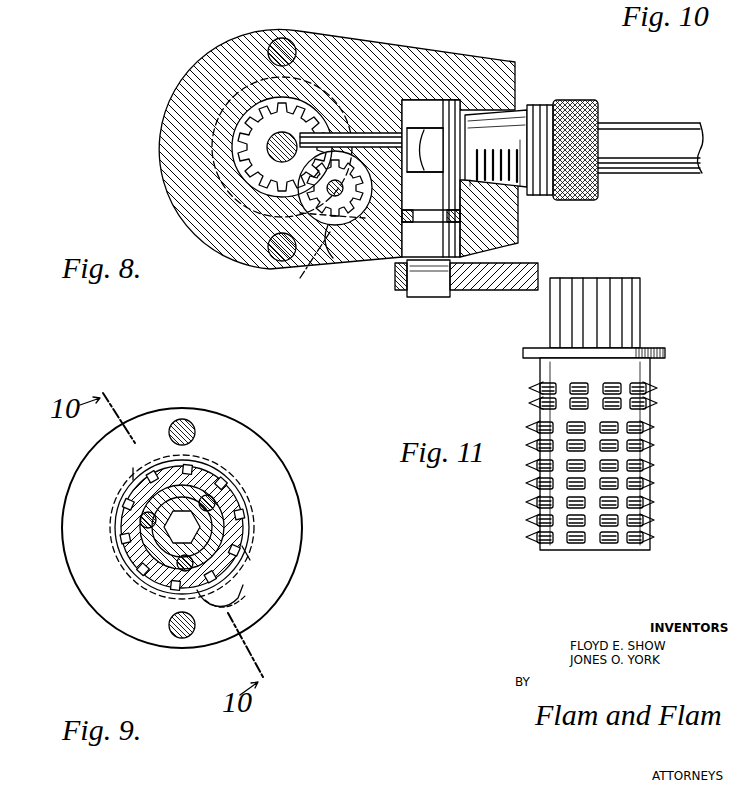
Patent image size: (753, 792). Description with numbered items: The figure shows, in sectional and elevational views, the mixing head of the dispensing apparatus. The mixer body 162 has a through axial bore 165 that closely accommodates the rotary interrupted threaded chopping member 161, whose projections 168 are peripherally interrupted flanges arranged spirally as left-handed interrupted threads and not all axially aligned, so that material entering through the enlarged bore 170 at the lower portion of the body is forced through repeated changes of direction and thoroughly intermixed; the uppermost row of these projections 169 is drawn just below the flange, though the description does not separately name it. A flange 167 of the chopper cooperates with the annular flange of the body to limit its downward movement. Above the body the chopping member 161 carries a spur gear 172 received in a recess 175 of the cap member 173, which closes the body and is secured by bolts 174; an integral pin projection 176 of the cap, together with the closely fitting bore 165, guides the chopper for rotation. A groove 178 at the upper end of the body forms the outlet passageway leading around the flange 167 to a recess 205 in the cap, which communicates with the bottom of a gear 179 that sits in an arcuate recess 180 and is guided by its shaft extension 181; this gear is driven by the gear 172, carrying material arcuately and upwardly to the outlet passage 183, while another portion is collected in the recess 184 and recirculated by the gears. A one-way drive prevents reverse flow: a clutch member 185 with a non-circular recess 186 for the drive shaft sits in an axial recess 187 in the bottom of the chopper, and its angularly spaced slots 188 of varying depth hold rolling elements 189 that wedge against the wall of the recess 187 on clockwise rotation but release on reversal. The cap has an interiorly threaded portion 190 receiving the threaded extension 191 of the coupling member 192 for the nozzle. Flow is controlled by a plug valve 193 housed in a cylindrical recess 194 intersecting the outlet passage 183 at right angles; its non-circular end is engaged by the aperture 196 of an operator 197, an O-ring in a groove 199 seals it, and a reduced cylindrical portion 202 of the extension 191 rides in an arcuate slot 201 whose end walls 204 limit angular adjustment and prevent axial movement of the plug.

In FIG. 9, the chopping member 161 is at (228, 478).
In FIG. 11, the chopping member 161 is at (652, 372).
In FIG. 9, the mixer body 162 is at (278, 574).
In FIG. 9, the axial bore 165 is at (202, 527).
In FIG. 11, the flange 167 is at (665, 352).
In FIG. 9, the projections 168 is at (134, 468).
In FIG. 11, the projections 168 is at (660, 426).
In FIG. 11, the upper teeth 169 is at (530, 401).
In FIG. 9, the bore 170 is at (252, 489).
In FIG. 8, the spur gear 172 is at (266, 156).
In FIG. 11, the spur gear 172 is at (618, 307).
In FIG. 8, the cap member 173 is at (176, 122).
In FIG. 8, the bolts 174 is at (283, 39).
In FIG. 9, the bolts 174 is at (188, 423).
In FIG. 8, the recess 175 is at (268, 172).
In FIG. 8, the pin projection 176 is at (272, 135).
In FIG. 8, the groove 178 is at (310, 263).
In FIG. 9, the groove 178 is at (238, 590).
In FIG. 8, the gear 179 is at (348, 212).
In FIG. 8, the arcuate recess 180 is at (338, 258).
In FIG. 8, the shaft extension 181 is at (352, 200).
In FIG. 8, the outlet passage 183 is at (366, 131).
In FIG. 8, the recess 184 is at (298, 212).
In FIG. 9, the clutch member 185 is at (132, 560).
In FIG. 9, the non-circular recess 186 is at (214, 535).
In FIG. 9, the axial recess 187 is at (125, 528).
In FIG. 9, the slots 188 is at (210, 468).
In FIG. 9, the rolling elements 189 is at (140, 518).
In FIG. 8, the interiorly threaded portion 190 is at (535, 196).
In FIG. 8, the threaded extension 191 is at (563, 115).
In FIG. 8, the coupling member 192 is at (600, 105).
In FIG. 8, the plug valve 193 is at (441, 100).
In FIG. 8, the cylindrical recess 194 is at (462, 244).
In FIG. 8, the aperture 196 is at (413, 290).
In FIG. 8, the operator 197 is at (490, 290).
In FIG. 8, the groove 199 is at (420, 210).
In FIG. 8, the arcuate slot 201 is at (422, 150).
In FIG. 8, the reduced cylindrical portion 202 is at (470, 118).
In FIG. 8, the end walls 204 is at (407, 147).
In FIG. 8, the recess 205 is at (410, 158).